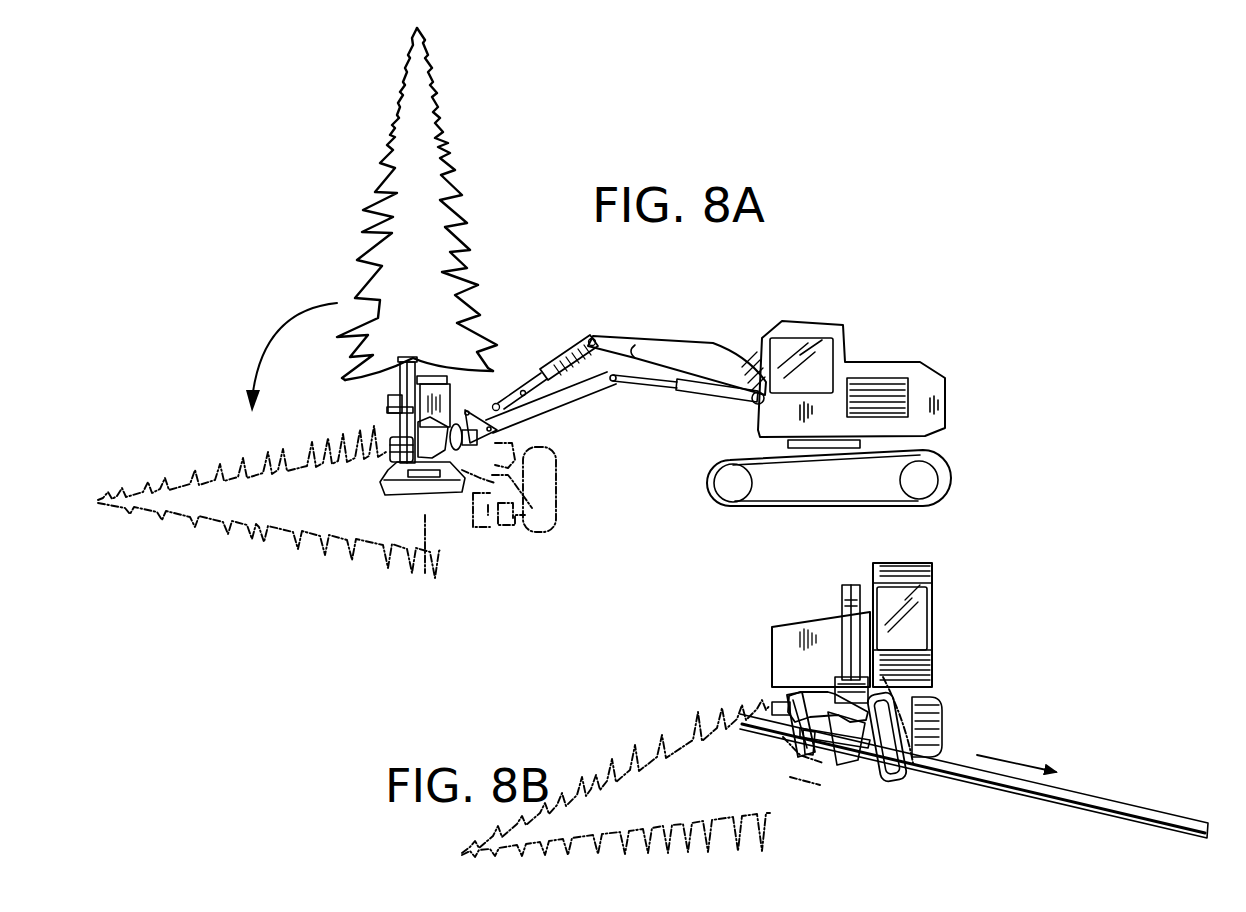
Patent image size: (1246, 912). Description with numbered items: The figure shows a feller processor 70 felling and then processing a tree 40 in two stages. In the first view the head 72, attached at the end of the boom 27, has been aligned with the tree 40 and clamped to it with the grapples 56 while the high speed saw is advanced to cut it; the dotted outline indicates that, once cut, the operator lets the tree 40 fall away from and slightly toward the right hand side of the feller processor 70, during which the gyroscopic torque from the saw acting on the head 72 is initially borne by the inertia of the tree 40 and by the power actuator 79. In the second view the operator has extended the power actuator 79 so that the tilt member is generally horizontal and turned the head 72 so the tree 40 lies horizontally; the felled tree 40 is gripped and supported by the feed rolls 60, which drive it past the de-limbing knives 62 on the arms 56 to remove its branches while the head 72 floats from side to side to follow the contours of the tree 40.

In FIG. 8A, the boom 27 is at (653, 343).
In FIG. 8A, the tree 40 is at (457, 267).
In FIG. 8B, the tree 40 is at (1027, 788).
In FIG. 8A, the grapples 56 is at (387, 403).
In FIG. 8B, the grapples 56 is at (818, 752).
In FIG. 8B, the feed rolls 60 is at (900, 763).
In FIG. 8B, the de-limbing knives 62 is at (805, 763).
In FIG. 8A, the feller processor 70 is at (757, 313).
In FIG. 8B, the feller processor 70 is at (951, 580).
In FIG. 8A, the head 72 is at (447, 392).
In FIG. 8A, the power actuator 79 is at (547, 360).